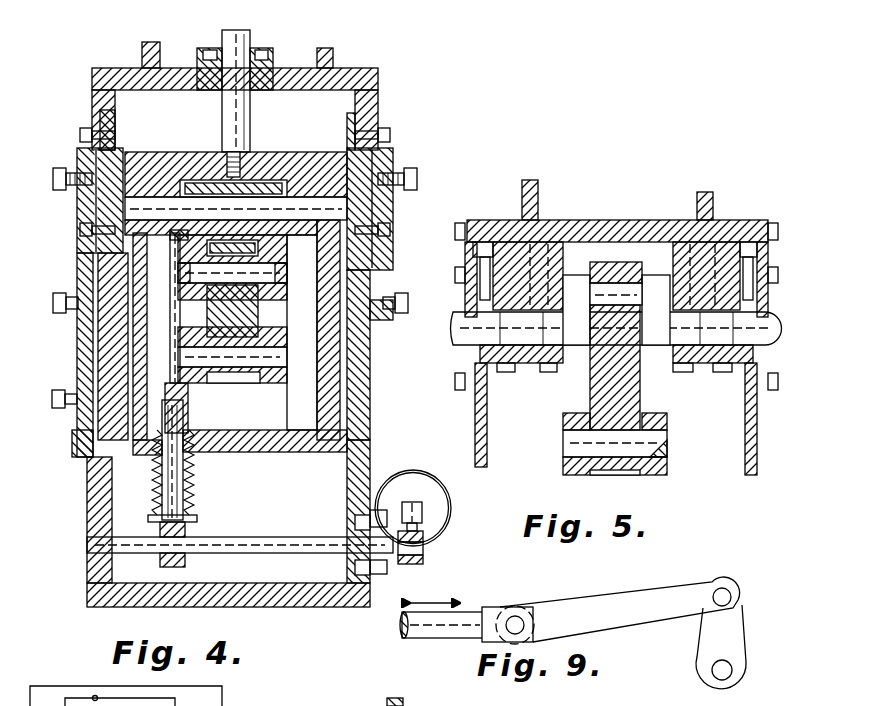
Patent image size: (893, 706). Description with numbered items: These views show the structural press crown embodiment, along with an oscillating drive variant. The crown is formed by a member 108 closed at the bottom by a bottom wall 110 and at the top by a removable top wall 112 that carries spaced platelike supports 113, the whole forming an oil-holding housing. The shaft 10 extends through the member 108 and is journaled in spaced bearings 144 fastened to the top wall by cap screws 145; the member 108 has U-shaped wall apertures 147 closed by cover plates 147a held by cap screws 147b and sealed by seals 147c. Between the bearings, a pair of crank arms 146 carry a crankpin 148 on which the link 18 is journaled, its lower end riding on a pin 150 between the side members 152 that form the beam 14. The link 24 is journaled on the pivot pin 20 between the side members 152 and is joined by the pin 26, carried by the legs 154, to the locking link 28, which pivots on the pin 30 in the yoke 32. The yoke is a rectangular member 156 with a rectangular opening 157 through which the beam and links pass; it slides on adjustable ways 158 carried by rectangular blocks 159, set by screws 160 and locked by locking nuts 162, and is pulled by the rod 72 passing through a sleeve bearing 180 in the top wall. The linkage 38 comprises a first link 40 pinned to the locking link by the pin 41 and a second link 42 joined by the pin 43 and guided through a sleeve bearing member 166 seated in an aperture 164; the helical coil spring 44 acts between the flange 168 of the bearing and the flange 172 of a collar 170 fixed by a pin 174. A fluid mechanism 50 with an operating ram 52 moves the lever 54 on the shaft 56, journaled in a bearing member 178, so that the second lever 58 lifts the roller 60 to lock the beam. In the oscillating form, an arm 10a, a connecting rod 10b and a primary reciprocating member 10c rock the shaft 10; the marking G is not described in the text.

In FIG. 5, the shaft 10 is at (773, 318).
In FIG. 9, the shaft 10 is at (732, 672).
In FIG. 9, the arm 10a is at (740, 620).
In FIG. 9, the connecting rod 10b is at (605, 592).
In FIG. 9, the primary reciprocating member 10c is at (432, 640).
In FIG. 4, the beam 14 is at (283, 336).
In FIG. 5, the link 18 is at (592, 380).
In FIG. 4, the pivot pin 20 is at (283, 358).
In FIG. 4, the link 24 is at (262, 313).
In FIG. 4, the pin 26 is at (232, 273).
In FIG. 4, the locking link 28 is at (242, 250).
In FIG. 4, the pin 30 is at (318, 209).
In FIG. 4, the yoke 32 is at (273, 145).
In FIG. 4, the linkage 38 is at (192, 393).
In FIG. 4, the first link 40 is at (172, 350).
In FIG. 4, the pin 41 is at (177, 230).
In FIG. 4, the second link 42 is at (176, 495).
In FIG. 4, the pin 43 is at (170, 392).
In FIG. 4, the helical coil spring 44 is at (196, 490).
In FIG. 4, the fluid mechanism 50 is at (426, 492).
In FIG. 4, the operating ram 52 is at (440, 506).
In FIG. 4, the lever 54 is at (424, 532).
In FIG. 4, the shaft 56 is at (268, 545).
In FIG. 4, the second lever 58 is at (190, 533).
In FIG. 4, the roller 60 is at (160, 530).
In FIG. 4, the rod 72 is at (250, 37).
In FIG. 4, the member 108 is at (90, 518).
In FIG. 5, the member 108 is at (750, 440).
In FIG. 4, the bottom wall 110 is at (238, 607).
In FIG. 4, the top wall 112 is at (376, 75).
In FIG. 5, the top wall 112 is at (652, 226).
In FIG. 4, the platelike supports 113 is at (154, 46).
In FIG. 5, the platelike supports 113 is at (540, 192).
In FIG. 5, the bearing 144 is at (545, 250).
In FIG. 5, the cap screws 145 is at (506, 372).
In FIG. 5, the crank arms 146 is at (585, 275).
In FIG. 5, the wall apertures 147 is at (775, 247).
In FIG. 5, the cover plates 147a is at (790, 222).
In FIG. 5, the cap screws 147b is at (770, 270).
In FIG. 5, the seal 147c is at (768, 352).
In FIG. 5, the crankpin 148 is at (615, 270).
In FIG. 5, the pin 150 is at (668, 437).
In FIG. 4, the side members 152 is at (292, 302).
In FIG. 5, the side members 152 is at (560, 415).
In FIG. 4, the legs 154 is at (183, 285).
In FIG. 4, the rectangular member 156 is at (306, 152).
In FIG. 4, the rectangular opening 157 is at (232, 330).
In FIG. 4, the adjustable ways 158 is at (86, 465).
In FIG. 4, the rectangular blocks 159 is at (82, 272).
In FIG. 4, the screws 160 is at (60, 300).
In FIG. 4, the locking nuts 162 is at (62, 440).
In FIG. 4, the aperture 164 is at (190, 425).
In FIG. 4, the sleeve bearing member 166 is at (155, 492).
In FIG. 4, the flange 168 is at (212, 462).
In FIG. 4, the collar 170 is at (195, 504).
In FIG. 4, the flange 172 is at (198, 518).
In FIG. 4, the pin 174 is at (153, 516).
In FIG. 4, the bearing member 178 is at (345, 535).
In FIG. 4, the sleeve bearing 180 is at (273, 63).
In FIG. 4, the gas flow direction G is at (40, 383).